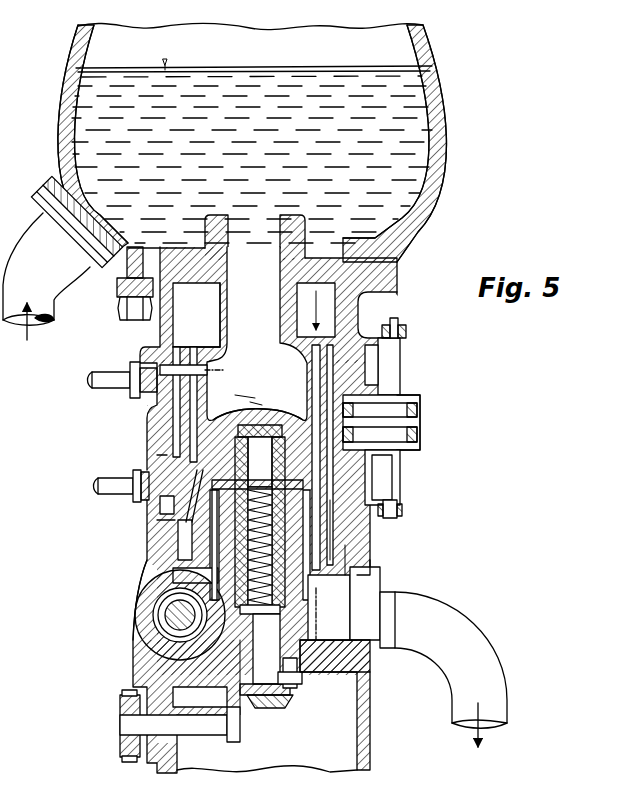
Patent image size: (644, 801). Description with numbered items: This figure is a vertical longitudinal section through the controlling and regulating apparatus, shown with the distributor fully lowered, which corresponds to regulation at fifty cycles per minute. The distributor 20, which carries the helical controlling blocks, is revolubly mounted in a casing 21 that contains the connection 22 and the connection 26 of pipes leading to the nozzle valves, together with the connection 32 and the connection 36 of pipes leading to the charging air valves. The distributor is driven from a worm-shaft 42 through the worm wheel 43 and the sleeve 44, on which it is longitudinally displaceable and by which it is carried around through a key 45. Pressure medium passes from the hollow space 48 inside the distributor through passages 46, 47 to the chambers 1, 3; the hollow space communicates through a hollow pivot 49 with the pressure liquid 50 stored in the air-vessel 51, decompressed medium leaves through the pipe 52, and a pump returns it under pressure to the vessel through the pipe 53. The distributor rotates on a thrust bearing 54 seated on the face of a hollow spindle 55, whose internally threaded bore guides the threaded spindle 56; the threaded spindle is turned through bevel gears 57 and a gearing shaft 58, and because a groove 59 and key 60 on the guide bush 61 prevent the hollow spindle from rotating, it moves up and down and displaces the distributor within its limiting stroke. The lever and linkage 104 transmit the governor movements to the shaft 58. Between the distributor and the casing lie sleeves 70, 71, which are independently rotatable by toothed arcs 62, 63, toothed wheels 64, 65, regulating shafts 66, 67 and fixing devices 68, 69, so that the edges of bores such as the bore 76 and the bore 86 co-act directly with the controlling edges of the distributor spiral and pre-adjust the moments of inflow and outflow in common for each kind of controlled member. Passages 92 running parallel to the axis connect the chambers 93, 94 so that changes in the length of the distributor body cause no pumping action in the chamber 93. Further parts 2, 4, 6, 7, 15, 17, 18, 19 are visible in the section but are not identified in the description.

The chamber 1 is at (155, 420).
The valve chamber 2 is at (327, 385).
The chamber 3 is at (172, 550).
The bore 4 is at (160, 505).
The section line / inlet connection 6 is at (97, 381).
The section line 7 is at (150, 411).
The recess 15 is at (178, 528).
The passage 17 is at (180, 357).
The rod 18 is at (192, 468).
The cover plate 19 is at (170, 563).
The distributor 20 is at (330, 507).
The casing 21 is at (364, 308).
The connection 22 is at (368, 367).
The connection 26 is at (142, 358).
The connection 32 is at (388, 470).
The connection 36 is at (150, 476).
The worm-shaft 42 is at (128, 614).
The worm wheel 43 is at (373, 650).
The sleeve 44 is at (350, 548).
The key 45 is at (155, 600).
The passage 46 is at (230, 371).
The passage 47 is at (150, 452).
The hollow space 48 is at (247, 397).
The hollow pivot 49 is at (266, 234).
The pressure liquid 50 is at (410, 158).
The air-vessel 51 is at (68, 88).
The pipe 52 is at (432, 612).
The pipe 53 is at (35, 240).
The thrust bearing 54 is at (269, 401).
The hollow spindle 55 is at (261, 519).
The threaded spindle 56 is at (313, 590).
The bevel gears 57 is at (263, 712).
The gearing shaft 58 is at (118, 725).
The groove 59 is at (362, 566).
The key 60 is at (293, 418).
The guide bush 61 is at (281, 692).
The toothed arc 62 is at (408, 418).
The toothed arc 63 is at (408, 435).
The toothed wheel 64 is at (425, 410).
The toothed wheel 65 is at (410, 447).
The regulating shaft 66 is at (402, 380).
The regulating shaft 67 is at (388, 490).
The fixing device 68 is at (410, 332).
The fixing device 69 is at (402, 514).
The sleeve 70 is at (172, 302).
The sleeve 71 is at (168, 545).
The bore 76 is at (188, 383).
The bore 86 is at (160, 520).
The passage 92 is at (318, 355).
The chamber 93 is at (207, 315).
The chamber 94 is at (357, 640).
The lever and linkage 104 is at (122, 748).